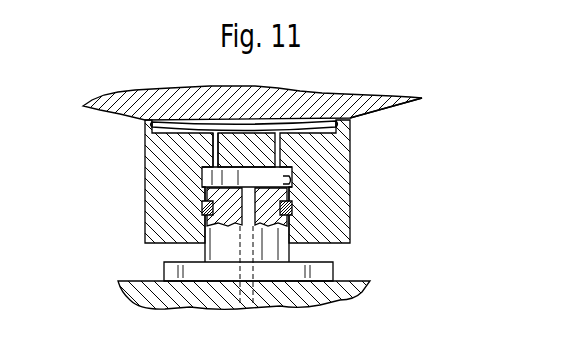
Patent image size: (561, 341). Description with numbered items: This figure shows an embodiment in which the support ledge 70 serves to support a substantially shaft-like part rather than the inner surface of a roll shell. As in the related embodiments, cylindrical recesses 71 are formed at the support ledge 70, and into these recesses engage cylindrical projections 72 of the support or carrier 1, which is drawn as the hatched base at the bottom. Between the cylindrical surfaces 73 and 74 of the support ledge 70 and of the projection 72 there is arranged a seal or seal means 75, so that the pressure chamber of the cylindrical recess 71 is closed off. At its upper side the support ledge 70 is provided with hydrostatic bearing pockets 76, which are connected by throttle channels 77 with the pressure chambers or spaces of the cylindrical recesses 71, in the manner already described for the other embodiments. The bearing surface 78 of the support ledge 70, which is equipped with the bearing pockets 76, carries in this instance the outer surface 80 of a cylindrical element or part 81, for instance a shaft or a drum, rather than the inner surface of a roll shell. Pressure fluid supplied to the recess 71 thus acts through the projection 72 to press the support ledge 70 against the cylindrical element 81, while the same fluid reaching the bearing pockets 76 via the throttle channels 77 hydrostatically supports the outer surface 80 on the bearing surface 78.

The support or carrier 1 is at (345, 292).
The support ledge 70 is at (157, 150).
The cylindrical recesses 71 is at (280, 172).
The cylindrical projections 72 is at (217, 250).
The cylindrical surface 73 is at (292, 181).
The cylindrical surface 74 is at (290, 250).
The seal or seal means 75 is at (292, 207).
The hydrostatic bearing pockets 76 is at (207, 127).
The throttle channels 77 is at (216, 152).
The bearing surface 78 is at (305, 121).
The outer surface 80 is at (392, 111).
The cylindrical element or part 81 is at (132, 97).